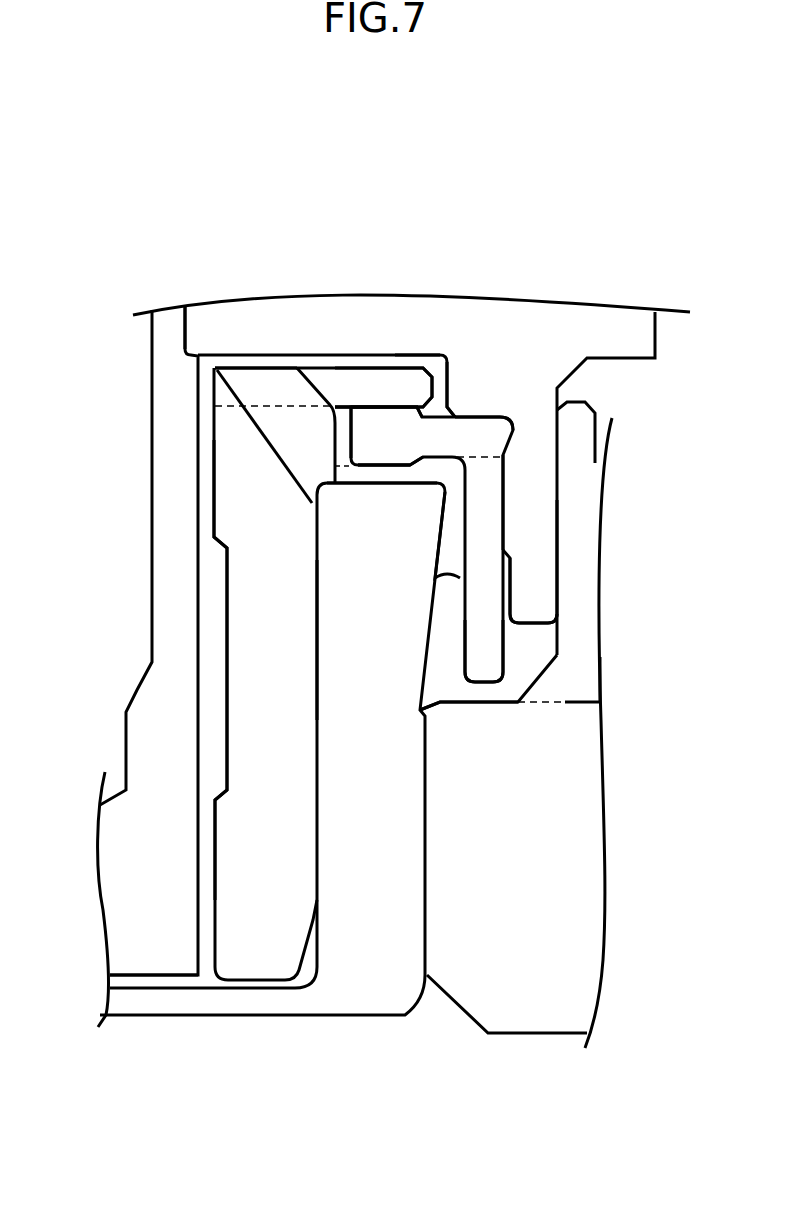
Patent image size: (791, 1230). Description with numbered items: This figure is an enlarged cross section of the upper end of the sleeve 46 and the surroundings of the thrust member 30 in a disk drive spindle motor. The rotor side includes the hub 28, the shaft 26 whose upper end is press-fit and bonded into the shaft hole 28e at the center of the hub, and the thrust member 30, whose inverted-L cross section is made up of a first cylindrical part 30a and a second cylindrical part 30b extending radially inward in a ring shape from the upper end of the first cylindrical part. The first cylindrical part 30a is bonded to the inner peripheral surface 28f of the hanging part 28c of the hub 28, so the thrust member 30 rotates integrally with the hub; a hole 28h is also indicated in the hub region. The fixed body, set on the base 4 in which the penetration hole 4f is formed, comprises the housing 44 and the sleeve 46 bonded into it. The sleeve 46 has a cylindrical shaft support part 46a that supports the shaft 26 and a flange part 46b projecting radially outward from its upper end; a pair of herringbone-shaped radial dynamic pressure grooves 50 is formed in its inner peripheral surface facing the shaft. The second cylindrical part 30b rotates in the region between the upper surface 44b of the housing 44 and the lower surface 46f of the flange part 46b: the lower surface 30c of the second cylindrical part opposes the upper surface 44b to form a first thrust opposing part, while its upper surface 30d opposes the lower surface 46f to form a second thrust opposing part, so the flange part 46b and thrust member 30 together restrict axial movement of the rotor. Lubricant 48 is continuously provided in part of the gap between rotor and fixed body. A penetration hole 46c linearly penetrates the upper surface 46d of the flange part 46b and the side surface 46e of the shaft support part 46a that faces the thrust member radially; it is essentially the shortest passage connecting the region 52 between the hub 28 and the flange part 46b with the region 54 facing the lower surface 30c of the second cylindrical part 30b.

The base 4 is at (545, 1007).
The penetration hole 4f is at (422, 750).
The shaft 26 is at (140, 957).
The hub 28 is at (432, 322).
The hanging part 28c is at (542, 527).
The shaft hole 28e is at (183, 331).
The inner peripheral surface 28f is at (503, 505).
The frame hole 28h is at (410, 356).
The thrust member 30 is at (482, 430).
The first cylindrical part 30a is at (488, 652).
The second cylindrical part 30b is at (472, 416).
The lower surface 30c is at (395, 472).
The upper surface 30d is at (368, 387).
The housing 44 is at (365, 957).
The upper surface 44b is at (356, 470).
The sleeve 46 is at (255, 957).
The shaft support part 46a is at (267, 683).
The flange part 46b is at (370, 383).
The penetration hole 46c is at (282, 430).
The upper surface 46d is at (382, 409).
The side surface 46e is at (320, 651).
The lower surface 46f is at (383, 395).
The lubricant 48 is at (447, 543).
The radial dynamic pressure grooves 50 is at (213, 470).
The region 52 is at (263, 360).
The region 54 is at (382, 470).